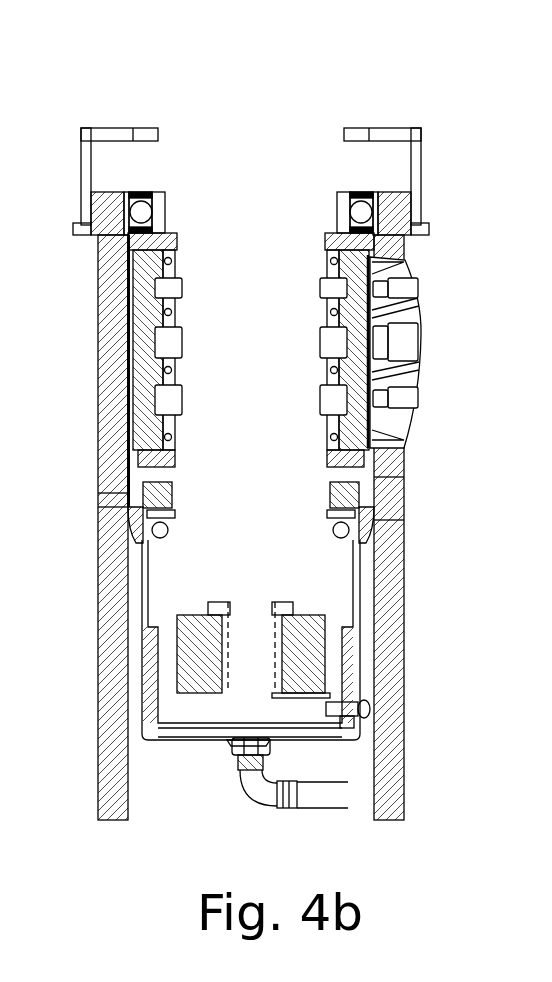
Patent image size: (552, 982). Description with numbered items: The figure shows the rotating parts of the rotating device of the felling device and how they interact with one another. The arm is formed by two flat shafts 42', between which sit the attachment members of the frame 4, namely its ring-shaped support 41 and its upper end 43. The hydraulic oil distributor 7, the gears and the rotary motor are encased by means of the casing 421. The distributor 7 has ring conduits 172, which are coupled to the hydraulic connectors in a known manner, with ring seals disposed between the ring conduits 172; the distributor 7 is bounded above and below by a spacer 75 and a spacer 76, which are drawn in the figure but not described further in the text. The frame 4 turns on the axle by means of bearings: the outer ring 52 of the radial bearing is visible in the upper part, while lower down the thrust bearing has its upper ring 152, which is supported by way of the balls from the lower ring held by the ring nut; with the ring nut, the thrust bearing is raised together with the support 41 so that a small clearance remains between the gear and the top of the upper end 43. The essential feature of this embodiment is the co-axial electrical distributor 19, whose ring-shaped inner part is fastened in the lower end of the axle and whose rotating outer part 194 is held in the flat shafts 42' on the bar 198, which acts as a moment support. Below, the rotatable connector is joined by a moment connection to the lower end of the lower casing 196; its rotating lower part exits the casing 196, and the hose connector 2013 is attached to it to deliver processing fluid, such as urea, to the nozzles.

The frame 4 is at (236, 100).
The casing 421 is at (78, 157).
The upper end of the frame 43 is at (394, 193).
The outer ring of bearing 52 is at (133, 192).
The upper spacer 75 is at (175, 240).
The hydraulic oil distributor 7 is at (147, 308).
The outer ring conduits 172 is at (190, 420).
The flat shafts of the arm 42' is at (231, 527).
The lower spacer 76 is at (170, 450).
The support of the frame 41 is at (170, 490).
The upper ring of thrust bearing 152 is at (173, 518).
The rotating outer part of electrical connector 194 is at (197, 648).
The lower casing 196 is at (147, 713).
The co-axial electrical connector 19 is at (233, 707).
The hose connector 2013 is at (253, 793).
The moment support 198 is at (290, 698).